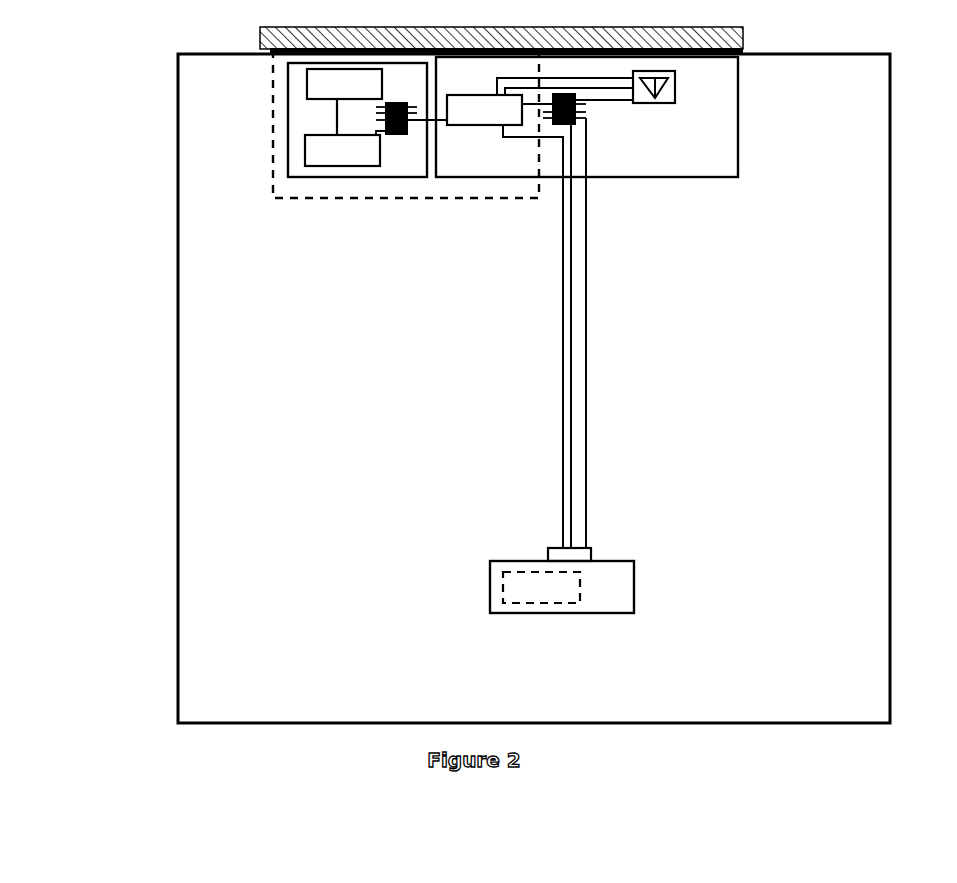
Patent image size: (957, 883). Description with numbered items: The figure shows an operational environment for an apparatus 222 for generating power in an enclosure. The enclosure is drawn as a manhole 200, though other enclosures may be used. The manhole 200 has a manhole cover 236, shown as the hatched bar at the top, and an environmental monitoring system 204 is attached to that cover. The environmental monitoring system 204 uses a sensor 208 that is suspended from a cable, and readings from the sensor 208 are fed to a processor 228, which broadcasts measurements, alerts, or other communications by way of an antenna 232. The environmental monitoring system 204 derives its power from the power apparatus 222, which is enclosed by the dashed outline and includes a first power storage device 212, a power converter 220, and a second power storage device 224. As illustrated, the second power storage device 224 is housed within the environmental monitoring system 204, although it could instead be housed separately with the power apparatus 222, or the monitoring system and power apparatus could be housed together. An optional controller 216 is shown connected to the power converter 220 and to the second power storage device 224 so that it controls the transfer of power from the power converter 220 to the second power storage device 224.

The manhole 200 is at (165, 61).
The environmental monitoring system 204 is at (590, 302).
The sensor 208 is at (611, 561).
The first power storage device 212 is at (287, 74).
The controller 216 is at (320, 157).
The power converter 220 is at (287, 157).
The apparatus for generating power in an enclosure 222 is at (373, 198).
The second power storage device 224 is at (485, 126).
The processor 228 is at (677, 88).
The antenna 232 is at (586, 110).
The manhole cover 236 is at (752, 38).